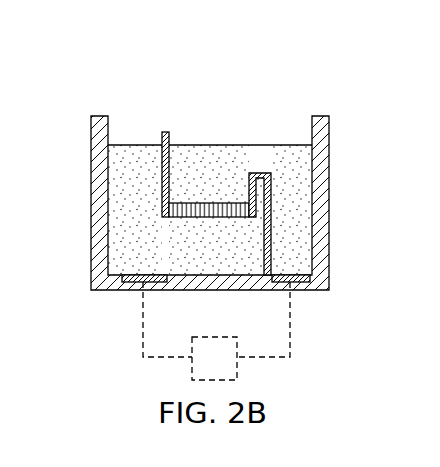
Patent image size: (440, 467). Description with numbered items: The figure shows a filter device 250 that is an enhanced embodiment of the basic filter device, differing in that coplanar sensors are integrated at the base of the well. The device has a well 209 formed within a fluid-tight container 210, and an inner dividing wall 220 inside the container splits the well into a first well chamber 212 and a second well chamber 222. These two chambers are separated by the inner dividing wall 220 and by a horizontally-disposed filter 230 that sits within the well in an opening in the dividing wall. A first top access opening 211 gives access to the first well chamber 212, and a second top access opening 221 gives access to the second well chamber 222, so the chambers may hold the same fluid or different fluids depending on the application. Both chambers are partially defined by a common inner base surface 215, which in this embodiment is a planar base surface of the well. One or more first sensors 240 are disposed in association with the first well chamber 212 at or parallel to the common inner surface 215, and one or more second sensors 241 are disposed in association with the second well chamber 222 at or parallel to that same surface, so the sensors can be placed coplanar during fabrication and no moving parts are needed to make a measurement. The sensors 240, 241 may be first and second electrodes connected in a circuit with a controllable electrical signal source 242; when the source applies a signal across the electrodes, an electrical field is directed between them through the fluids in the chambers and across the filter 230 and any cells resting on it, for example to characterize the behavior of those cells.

The filter device 250 is at (93, 38).
The well 209 is at (288, 182).
The fluid-tight container 210 is at (330, 130).
The first top access opening 211 is at (130, 133).
The first well chamber 212 is at (138, 231).
The common inner base surface 215 is at (208, 265).
The inner dividing wall 220 is at (163, 132).
The second top access opening 221 is at (286, 130).
The second well chamber 222 is at (297, 256).
The horizontally-disposed filter 230 is at (223, 218).
The first sensor 240 is at (133, 281).
The second sensor 241 is at (302, 281).
The controllable electrical signal source 242 is at (237, 366).